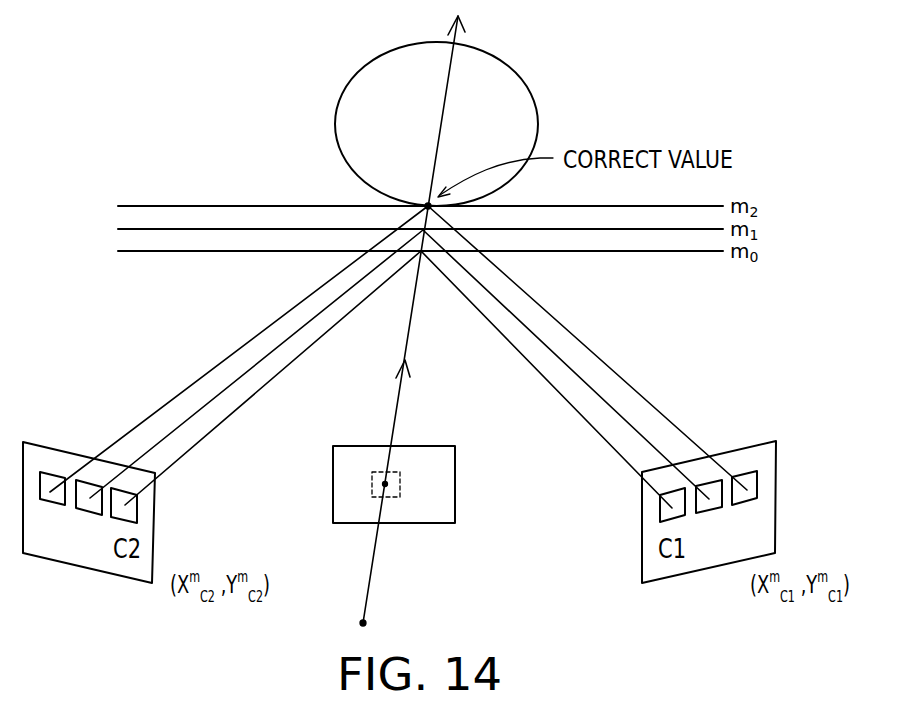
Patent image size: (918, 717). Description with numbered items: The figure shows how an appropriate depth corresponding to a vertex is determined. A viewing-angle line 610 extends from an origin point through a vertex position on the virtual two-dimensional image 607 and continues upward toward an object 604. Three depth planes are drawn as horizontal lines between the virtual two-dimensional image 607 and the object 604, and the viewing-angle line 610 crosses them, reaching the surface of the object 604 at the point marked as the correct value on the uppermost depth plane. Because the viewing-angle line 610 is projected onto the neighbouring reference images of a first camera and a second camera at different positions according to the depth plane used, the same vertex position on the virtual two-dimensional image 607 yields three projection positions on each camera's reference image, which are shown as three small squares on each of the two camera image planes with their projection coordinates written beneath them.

The object 604 is at (540, 123).
The virtual 2-D image 607 is at (455, 496).
The viewing-angle line 610 is at (395, 413).